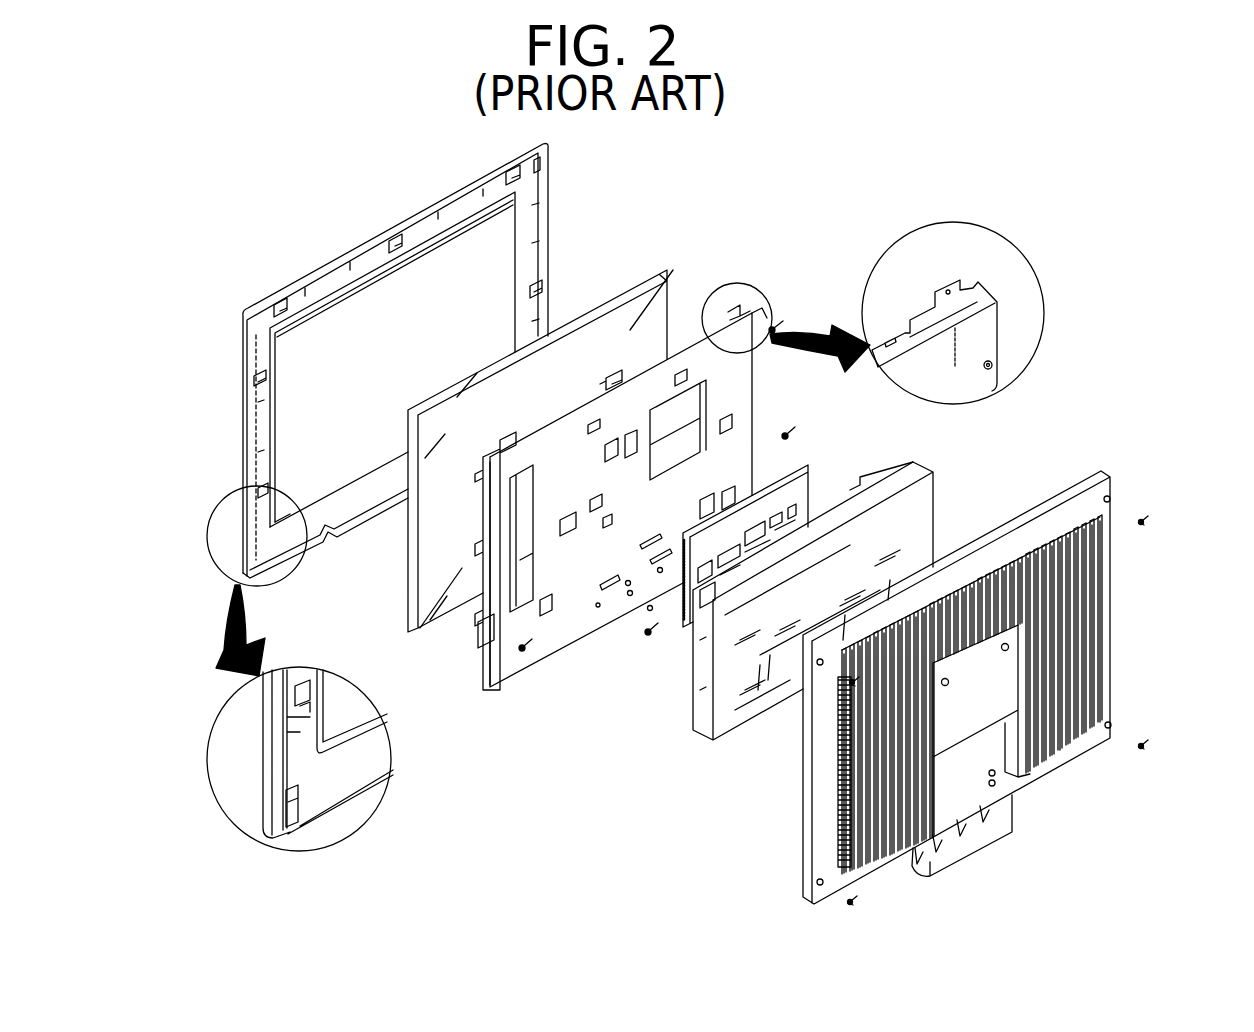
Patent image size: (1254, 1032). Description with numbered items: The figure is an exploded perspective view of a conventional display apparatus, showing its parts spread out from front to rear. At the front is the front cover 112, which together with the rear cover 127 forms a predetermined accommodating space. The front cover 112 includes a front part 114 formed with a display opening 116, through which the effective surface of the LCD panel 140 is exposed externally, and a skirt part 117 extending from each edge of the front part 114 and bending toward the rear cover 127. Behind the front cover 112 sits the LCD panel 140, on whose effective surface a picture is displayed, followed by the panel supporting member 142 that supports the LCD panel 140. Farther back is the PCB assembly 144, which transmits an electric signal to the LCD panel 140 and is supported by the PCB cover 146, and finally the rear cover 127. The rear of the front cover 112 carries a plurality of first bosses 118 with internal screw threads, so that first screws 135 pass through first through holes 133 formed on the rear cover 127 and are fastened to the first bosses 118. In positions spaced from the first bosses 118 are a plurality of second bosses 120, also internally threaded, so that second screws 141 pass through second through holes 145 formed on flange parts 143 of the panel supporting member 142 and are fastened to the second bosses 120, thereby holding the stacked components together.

The front cover 112 is at (332, 361).
The front part 114 is at (242, 372).
The display opening 116 is at (275, 500).
The skirt part 117 is at (242, 430).
The first boss 118 is at (545, 168).
The second boss 120 is at (397, 237).
The rear cover 127 is at (1112, 604).
The first through hole 133 is at (1112, 498).
The first screw 135 is at (1146, 520).
The LCD panel 140 is at (660, 268).
The second screw 141 is at (782, 326).
The panel supporting member 142 is at (577, 638).
The flange part 143 is at (617, 382).
The PCB assembly 144 is at (803, 467).
The second through hole 145 is at (947, 287).
The PCB cover 146 is at (917, 473).